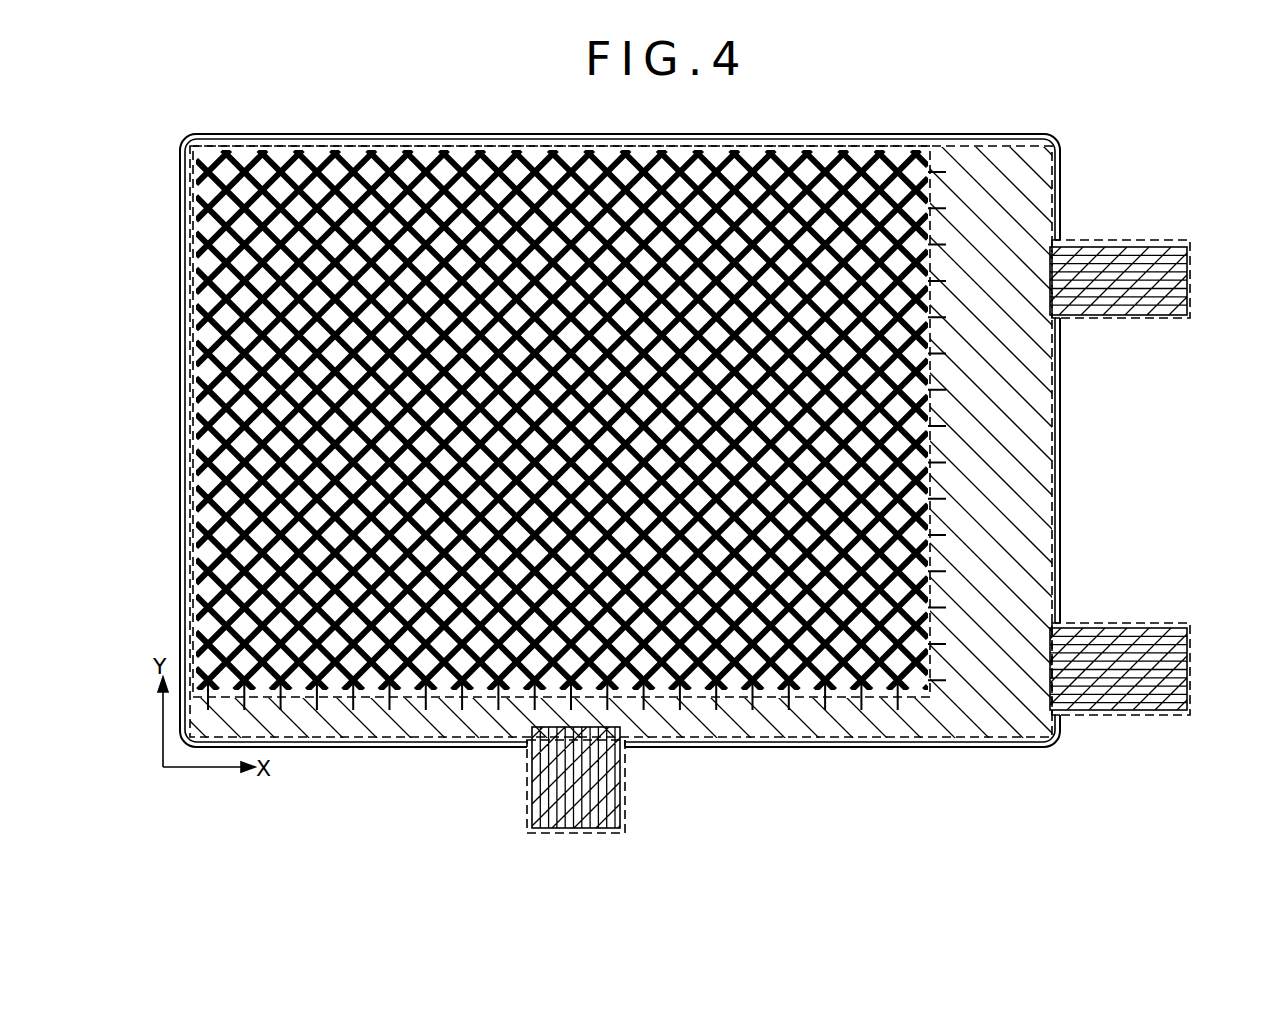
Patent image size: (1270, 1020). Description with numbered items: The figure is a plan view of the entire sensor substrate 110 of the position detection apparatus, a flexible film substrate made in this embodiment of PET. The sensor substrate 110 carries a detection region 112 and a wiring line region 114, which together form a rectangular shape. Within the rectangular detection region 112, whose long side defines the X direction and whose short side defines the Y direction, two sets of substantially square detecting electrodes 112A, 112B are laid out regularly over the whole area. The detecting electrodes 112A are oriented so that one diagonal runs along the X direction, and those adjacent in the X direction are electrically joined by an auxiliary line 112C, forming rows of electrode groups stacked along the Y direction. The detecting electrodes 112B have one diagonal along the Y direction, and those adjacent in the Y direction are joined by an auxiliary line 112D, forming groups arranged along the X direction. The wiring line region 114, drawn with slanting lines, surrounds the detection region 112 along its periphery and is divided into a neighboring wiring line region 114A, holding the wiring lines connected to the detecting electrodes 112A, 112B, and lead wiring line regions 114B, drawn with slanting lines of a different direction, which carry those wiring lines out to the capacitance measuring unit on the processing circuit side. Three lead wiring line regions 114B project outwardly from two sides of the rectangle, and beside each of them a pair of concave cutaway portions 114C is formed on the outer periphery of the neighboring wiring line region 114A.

The sensor substrate 110 is at (1058, 137).
The detection region 112 is at (569, 425).
The detecting electrodes 112A is at (805, 682).
The detecting electrodes 112B is at (833, 665).
The auxiliary line 112C is at (425, 684).
The auxiliary line 112D is at (317, 684).
The wiring line region 114 is at (635, 468).
The neighboring wiring line region 114A is at (1060, 466).
The lead wiring line regions 114B is at (1110, 240).
The cutaway portions 114C is at (1062, 319).